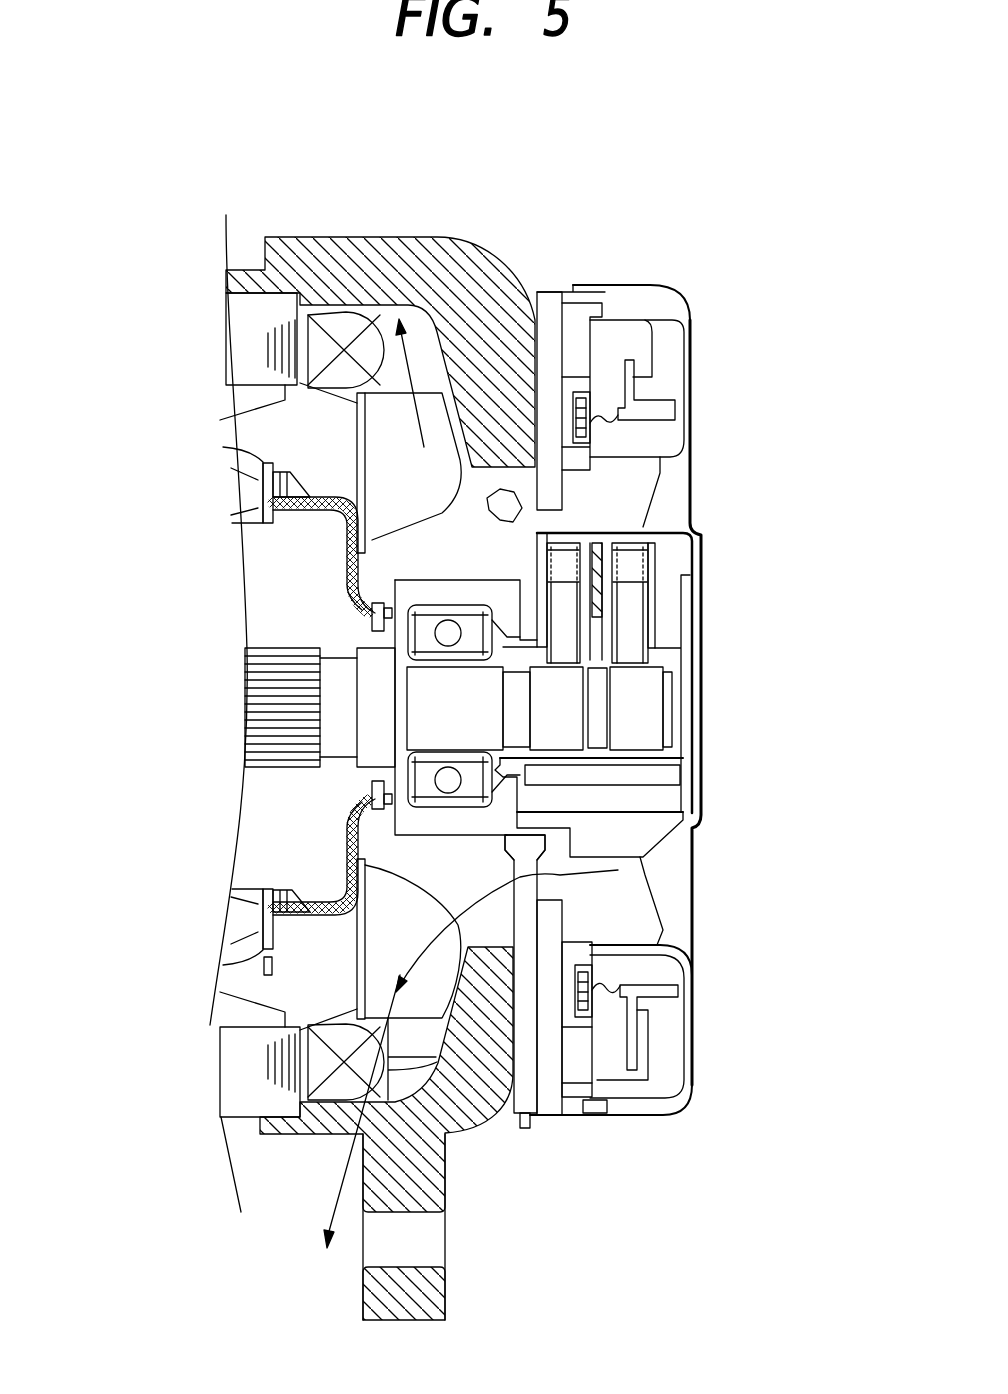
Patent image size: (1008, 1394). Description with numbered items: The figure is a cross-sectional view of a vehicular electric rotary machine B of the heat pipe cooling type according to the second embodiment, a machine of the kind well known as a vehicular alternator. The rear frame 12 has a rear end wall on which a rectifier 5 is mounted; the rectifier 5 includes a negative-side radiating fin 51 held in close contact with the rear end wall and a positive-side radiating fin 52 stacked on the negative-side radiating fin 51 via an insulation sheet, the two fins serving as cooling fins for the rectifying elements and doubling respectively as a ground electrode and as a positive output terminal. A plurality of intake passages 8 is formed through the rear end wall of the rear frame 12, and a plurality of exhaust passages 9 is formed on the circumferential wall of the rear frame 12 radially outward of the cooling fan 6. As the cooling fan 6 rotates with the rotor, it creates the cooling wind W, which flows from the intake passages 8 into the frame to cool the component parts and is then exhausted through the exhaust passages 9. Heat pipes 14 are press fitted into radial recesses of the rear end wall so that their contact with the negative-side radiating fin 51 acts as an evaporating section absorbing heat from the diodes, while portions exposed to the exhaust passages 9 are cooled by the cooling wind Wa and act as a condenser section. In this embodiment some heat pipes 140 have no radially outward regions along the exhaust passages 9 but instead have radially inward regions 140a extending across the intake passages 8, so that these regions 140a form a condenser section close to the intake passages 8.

The exhaust passages 9 is at (420, 268).
The electric rotary machine B is at (687, 273).
The cooling wind W is at (612, 498).
The heat pipes 14 is at (507, 503).
The radially inward regions 140a is at (527, 870).
The intake passages 8 is at (465, 872).
The cooling fan 6 is at (397, 945).
The rear frame 12 is at (428, 1178).
The cooling wind Wa is at (338, 1188).
The heat pipes 140 is at (530, 1090).
The negative-side radiating fin 51 is at (557, 1067).
The rectifier 5 is at (577, 1117).
The positive-side radiating fin 52 is at (583, 1067).